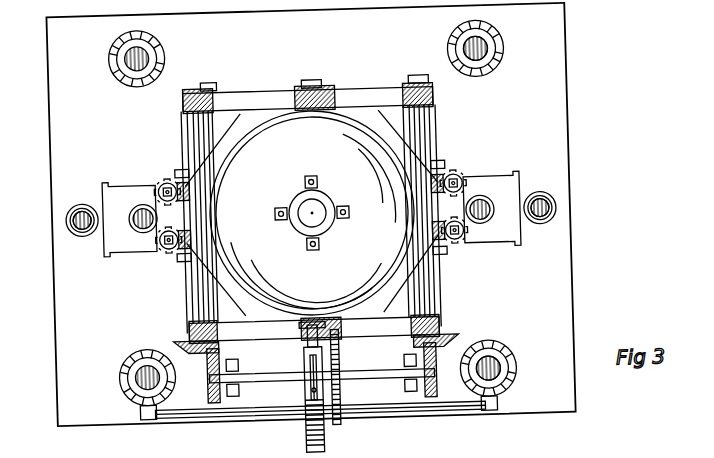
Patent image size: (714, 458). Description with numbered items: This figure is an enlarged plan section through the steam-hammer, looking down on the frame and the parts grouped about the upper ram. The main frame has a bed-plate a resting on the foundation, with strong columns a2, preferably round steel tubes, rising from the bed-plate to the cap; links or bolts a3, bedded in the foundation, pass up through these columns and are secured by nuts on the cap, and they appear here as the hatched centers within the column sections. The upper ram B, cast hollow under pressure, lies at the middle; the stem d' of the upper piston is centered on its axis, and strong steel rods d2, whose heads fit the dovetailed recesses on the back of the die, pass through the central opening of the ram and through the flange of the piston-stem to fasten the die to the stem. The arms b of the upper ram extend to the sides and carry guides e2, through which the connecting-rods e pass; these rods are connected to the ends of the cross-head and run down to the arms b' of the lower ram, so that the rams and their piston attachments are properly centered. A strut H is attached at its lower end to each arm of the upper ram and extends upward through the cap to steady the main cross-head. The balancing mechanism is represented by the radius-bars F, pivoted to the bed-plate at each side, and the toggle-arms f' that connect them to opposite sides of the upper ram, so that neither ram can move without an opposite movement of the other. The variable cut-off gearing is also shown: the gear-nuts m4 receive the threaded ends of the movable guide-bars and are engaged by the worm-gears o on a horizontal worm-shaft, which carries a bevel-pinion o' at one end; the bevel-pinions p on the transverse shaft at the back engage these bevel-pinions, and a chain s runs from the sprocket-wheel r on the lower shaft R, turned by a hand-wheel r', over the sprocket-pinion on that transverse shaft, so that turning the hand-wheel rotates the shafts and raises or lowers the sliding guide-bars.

The bed-plate a is at (570, 333).
The columns a2 is at (470, 360).
The links or bolts a3 is at (492, 54).
The arms of the upper ram b is at (310, 235).
The arms of the lower ram b' is at (337, 343).
The upper ram B is at (312, 213).
The stem of the upper piston d' is at (321, 206).
The steel rods d2 is at (313, 176).
The connecting-rods e is at (70, 226).
The guides e2 is at (592, 196).
The toggle-arms f' is at (310, 206).
The radius-bars F is at (212, 302).
The strut H is at (137, 204).
The gear-nut m4 is at (466, 260).
The worm-gears o is at (326, 213).
The bevel-pinion o' is at (331, 334).
The bevel-pinion p is at (380, 370).
The sprocket-wheel r is at (330, 393).
The hand-wheel r' is at (301, 402).
The horizontal shaft R is at (364, 412).
The chain s is at (318, 392).